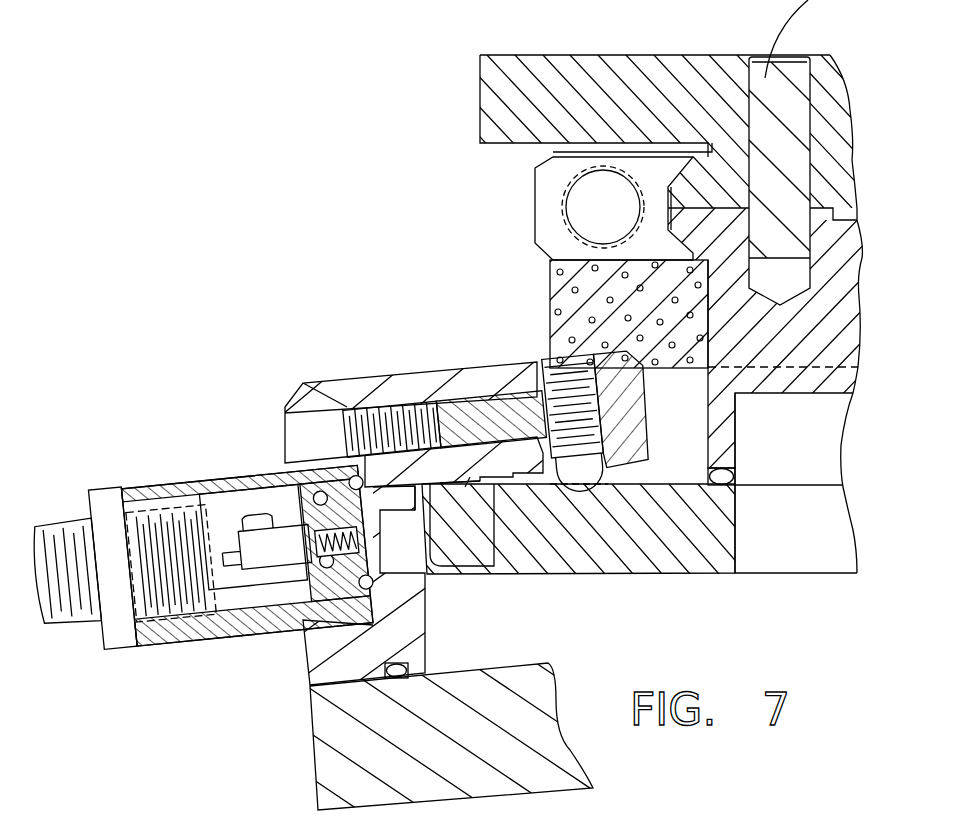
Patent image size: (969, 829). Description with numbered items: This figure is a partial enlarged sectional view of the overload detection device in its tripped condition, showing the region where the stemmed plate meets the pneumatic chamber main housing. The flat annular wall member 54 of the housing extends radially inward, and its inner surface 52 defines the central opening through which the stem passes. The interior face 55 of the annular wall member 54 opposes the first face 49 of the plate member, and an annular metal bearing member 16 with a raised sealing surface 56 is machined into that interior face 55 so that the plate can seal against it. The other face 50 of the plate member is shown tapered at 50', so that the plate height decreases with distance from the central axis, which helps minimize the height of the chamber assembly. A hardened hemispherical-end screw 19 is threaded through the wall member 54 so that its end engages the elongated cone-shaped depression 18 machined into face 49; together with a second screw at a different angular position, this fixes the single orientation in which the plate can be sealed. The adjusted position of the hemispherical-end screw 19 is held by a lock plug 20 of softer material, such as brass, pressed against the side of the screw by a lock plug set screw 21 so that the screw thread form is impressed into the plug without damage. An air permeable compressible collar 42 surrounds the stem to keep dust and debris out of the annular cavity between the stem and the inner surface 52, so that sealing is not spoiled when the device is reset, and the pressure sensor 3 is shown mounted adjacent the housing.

The pressure sensor 3 is at (270, 473).
The annular metal bearing member 16 is at (500, 473).
The elongated cone-shaped depression 18 is at (608, 492).
The hemispherical-end screw 19 is at (550, 357).
The lock plug 20 is at (485, 410).
The lock plug set screw 21 is at (393, 390).
The air permeable compressible collar 42 is at (550, 288).
The first face 49 is at (667, 487).
The other face 50 is at (580, 551).
The tapered face 50' is at (449, 688).
The inner surface 52 is at (646, 455).
The annular wall member 54 is at (360, 408).
The interior face 55 is at (408, 490).
The raised sealing surface 56 is at (465, 490).